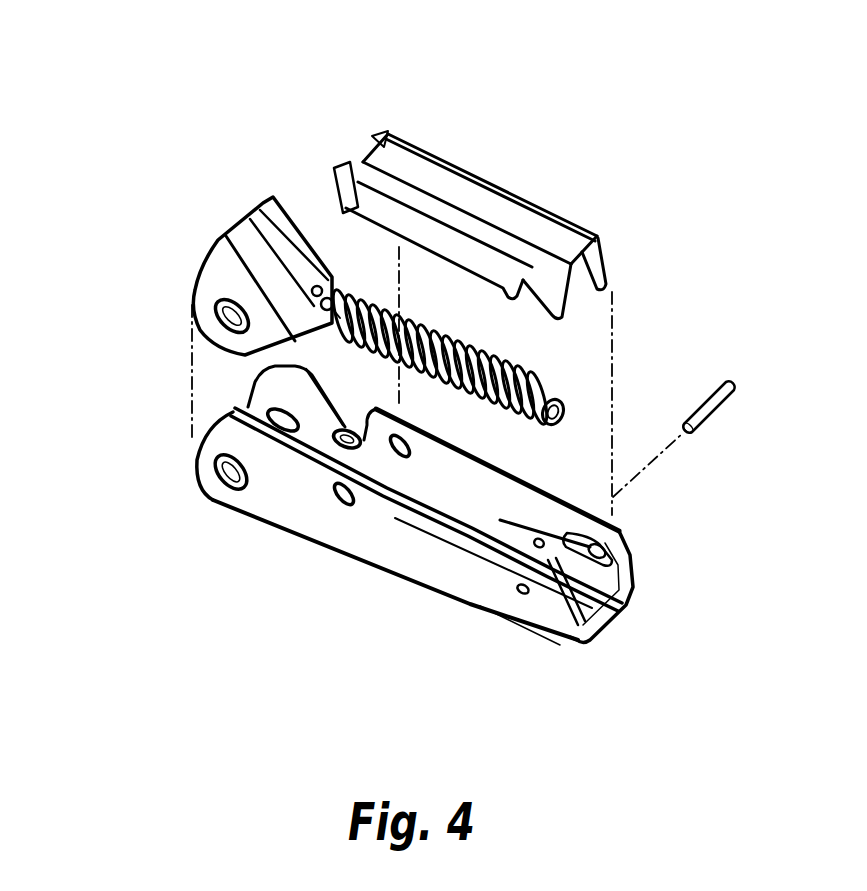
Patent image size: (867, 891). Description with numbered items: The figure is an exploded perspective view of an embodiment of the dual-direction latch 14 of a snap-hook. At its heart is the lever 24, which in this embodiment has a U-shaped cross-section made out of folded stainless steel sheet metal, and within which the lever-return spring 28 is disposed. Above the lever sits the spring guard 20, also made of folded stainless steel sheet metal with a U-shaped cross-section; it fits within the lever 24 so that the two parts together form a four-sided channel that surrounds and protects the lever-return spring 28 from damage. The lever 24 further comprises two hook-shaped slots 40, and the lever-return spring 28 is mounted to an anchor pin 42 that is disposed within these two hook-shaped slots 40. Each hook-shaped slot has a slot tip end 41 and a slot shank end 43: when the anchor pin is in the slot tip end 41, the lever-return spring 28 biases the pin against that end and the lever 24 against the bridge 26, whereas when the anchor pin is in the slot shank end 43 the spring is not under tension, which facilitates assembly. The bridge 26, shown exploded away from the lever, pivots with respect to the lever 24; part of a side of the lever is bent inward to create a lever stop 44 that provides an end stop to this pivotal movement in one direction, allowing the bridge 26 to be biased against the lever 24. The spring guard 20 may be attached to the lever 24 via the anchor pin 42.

The latch 14 is at (104, 60).
The spring guard 20 is at (540, 204).
The lever 24 is at (375, 561).
The bridge 26 is at (268, 194).
The lever-return spring 28 is at (453, 340).
The hook-shaped slots 40 is at (527, 537).
The slot tip end 41 is at (573, 530).
The anchor pin 42 is at (700, 405).
The slot shank end 43 is at (507, 632).
The lever stop 44 is at (345, 443).